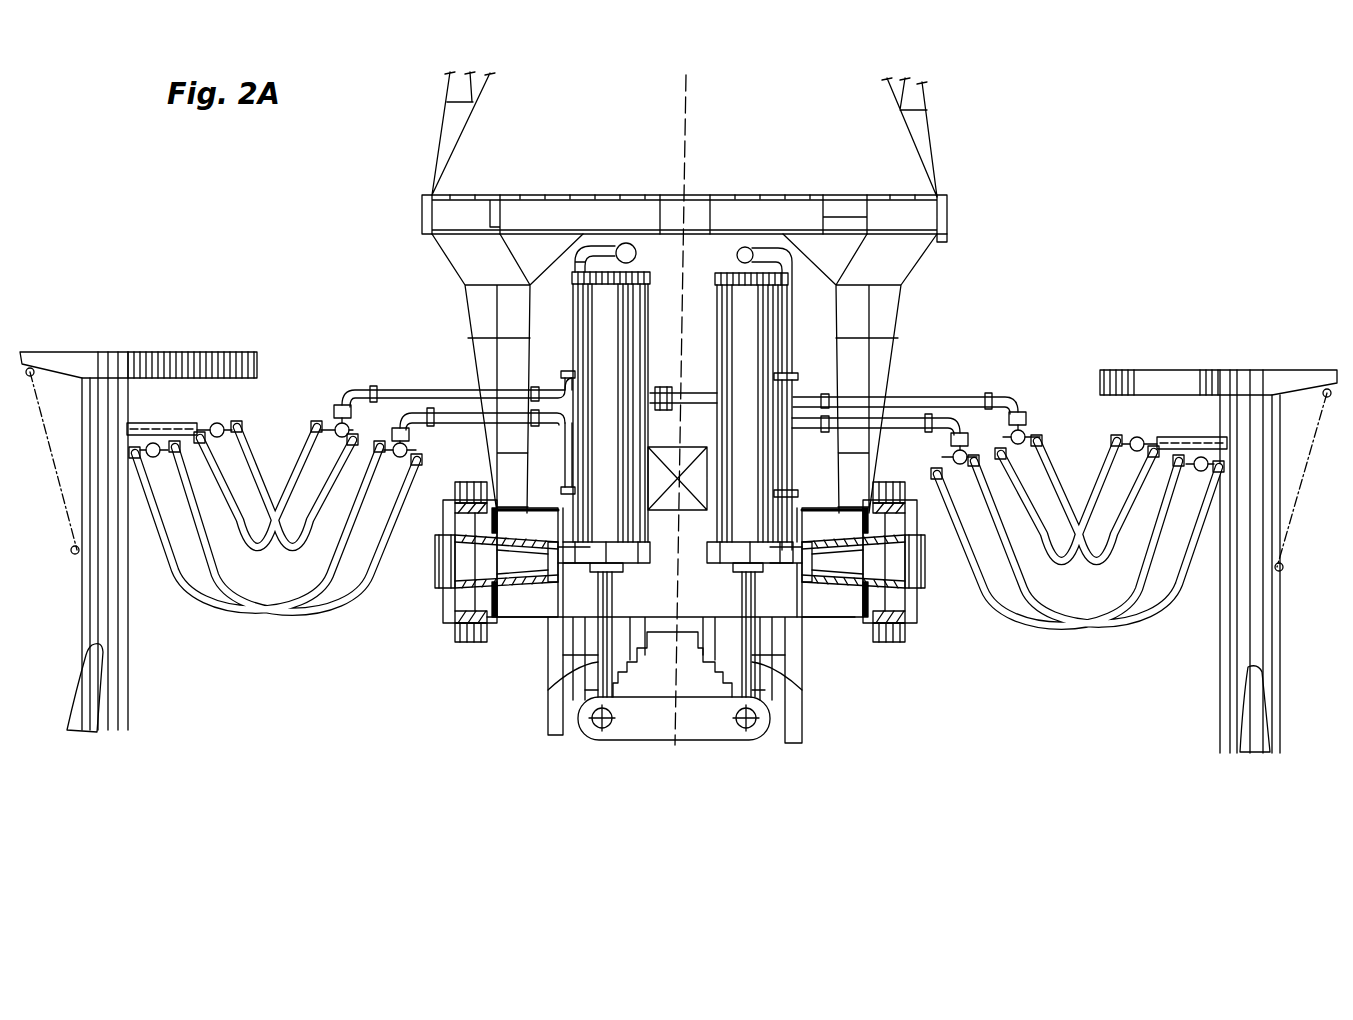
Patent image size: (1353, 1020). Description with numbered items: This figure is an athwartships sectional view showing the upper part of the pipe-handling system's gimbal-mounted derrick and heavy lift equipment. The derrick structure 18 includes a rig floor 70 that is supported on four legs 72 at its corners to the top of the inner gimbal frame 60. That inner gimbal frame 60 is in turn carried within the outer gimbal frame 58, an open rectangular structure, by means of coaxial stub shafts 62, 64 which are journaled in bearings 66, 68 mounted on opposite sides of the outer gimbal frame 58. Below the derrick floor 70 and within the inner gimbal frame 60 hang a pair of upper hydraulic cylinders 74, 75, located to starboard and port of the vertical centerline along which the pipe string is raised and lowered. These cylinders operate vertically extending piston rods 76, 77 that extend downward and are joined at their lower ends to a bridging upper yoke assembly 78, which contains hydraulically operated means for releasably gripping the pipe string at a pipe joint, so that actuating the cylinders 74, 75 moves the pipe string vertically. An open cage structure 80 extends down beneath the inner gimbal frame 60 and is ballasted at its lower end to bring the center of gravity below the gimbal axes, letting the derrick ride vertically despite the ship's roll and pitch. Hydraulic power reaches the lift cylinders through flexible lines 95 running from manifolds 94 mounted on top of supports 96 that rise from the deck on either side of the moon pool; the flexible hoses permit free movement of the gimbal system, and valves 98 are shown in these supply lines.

The derrick structure 18 is at (937, 132).
The rig floor 70 is at (518, 194).
The legs 72 is at (470, 298).
The upper hydraulic cylinder 74 is at (718, 272).
The upper hydraulic cylinder 75 is at (643, 270).
The outer gimbal frame 58 is at (465, 480).
The inner gimbal frame 60 is at (513, 620).
The stub shaft 62 is at (927, 545).
The stub shaft 64 is at (425, 542).
The bearing 66 is at (900, 533).
The bearing 68 is at (443, 612).
The piston rod 76 is at (747, 632).
The piston rod 77 is at (600, 672).
The upper yoke assembly 78 is at (705, 730).
The cage structure 80 is at (567, 707).
The manifold 94 is at (145, 447).
The flexible lines 95 is at (275, 503).
The support 96 is at (113, 660).
The valve 98 is at (327, 425).